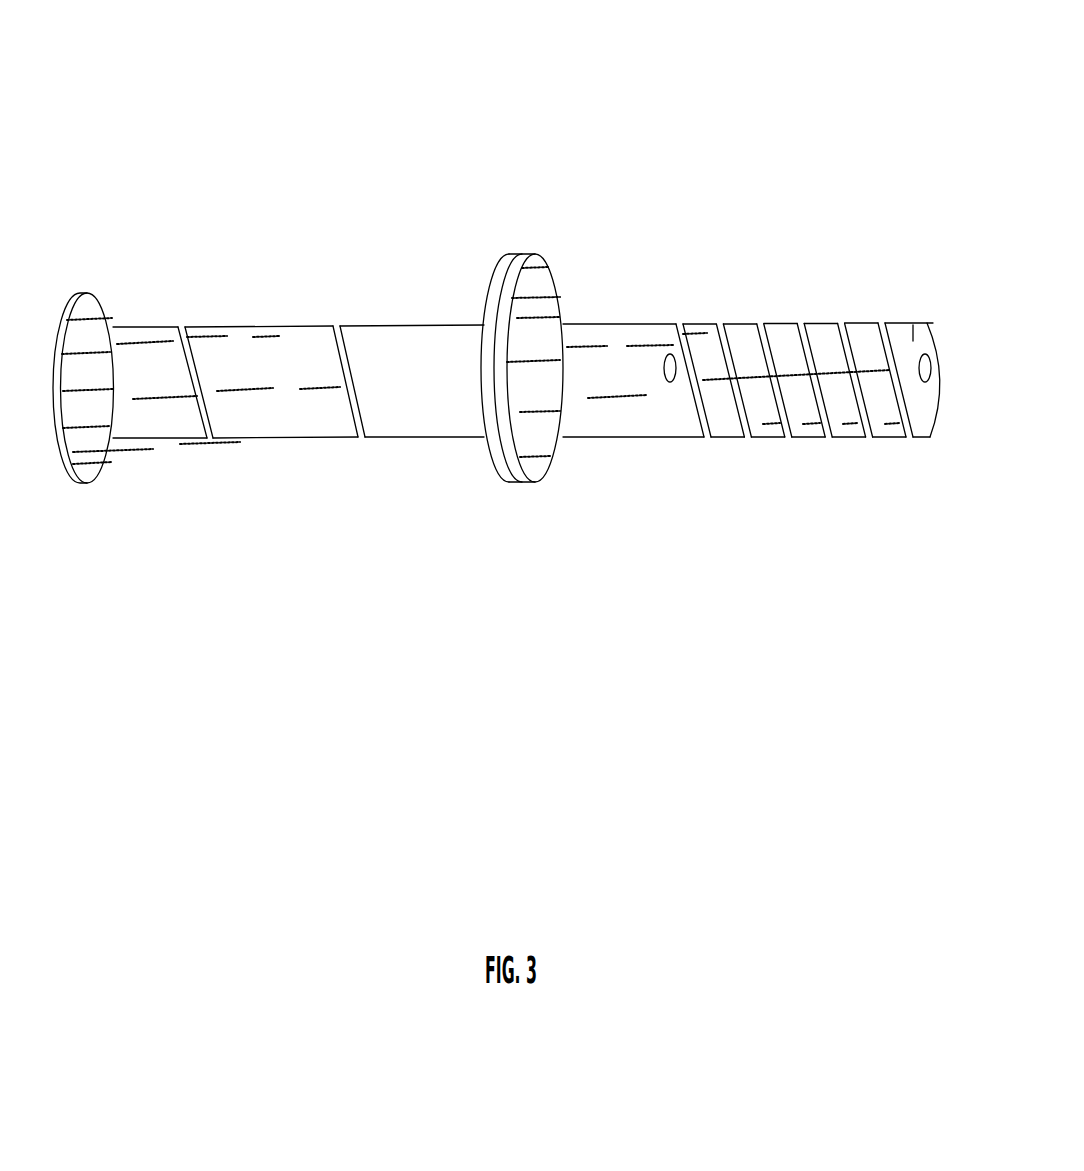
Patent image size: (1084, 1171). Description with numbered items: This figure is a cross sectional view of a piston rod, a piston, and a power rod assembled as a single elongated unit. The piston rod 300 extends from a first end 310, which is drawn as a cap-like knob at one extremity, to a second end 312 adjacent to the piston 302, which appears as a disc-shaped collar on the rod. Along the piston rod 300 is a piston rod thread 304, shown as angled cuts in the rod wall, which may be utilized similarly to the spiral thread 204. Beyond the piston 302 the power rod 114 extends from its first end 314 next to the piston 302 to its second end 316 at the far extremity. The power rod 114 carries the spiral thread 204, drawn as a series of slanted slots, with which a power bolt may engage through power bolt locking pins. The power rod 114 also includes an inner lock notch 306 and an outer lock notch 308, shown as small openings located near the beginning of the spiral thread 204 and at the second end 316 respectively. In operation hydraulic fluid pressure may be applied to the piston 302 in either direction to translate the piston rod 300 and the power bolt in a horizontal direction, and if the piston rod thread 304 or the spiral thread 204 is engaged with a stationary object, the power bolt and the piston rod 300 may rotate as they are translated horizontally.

The power rod 114 is at (687, 283).
The spiral thread 204 is at (792, 452).
The piston rod 300 is at (185, 283).
The piston 302 is at (519, 354).
The piston rod thread 304 is at (360, 440).
The inner lock notch 306 is at (671, 383).
The outer lock notch 308 is at (922, 385).
The first end 310 is at (95, 483).
The second end 312 is at (485, 440).
The first end 314 is at (550, 460).
The second end 316 is at (936, 335).